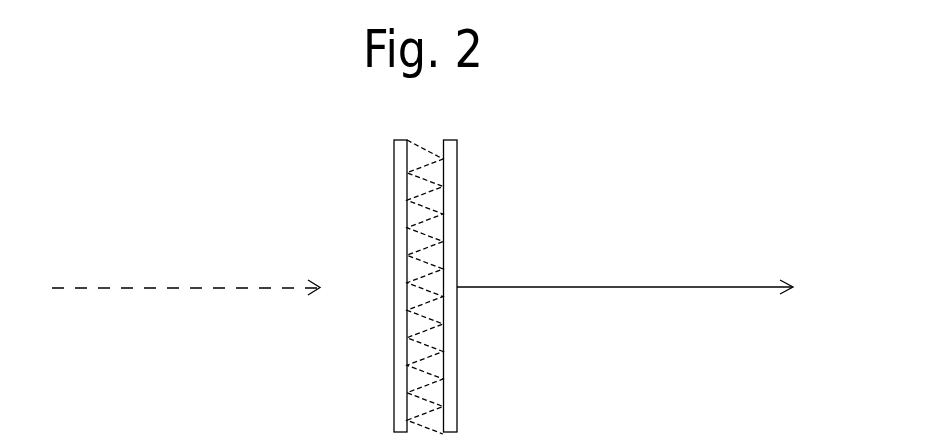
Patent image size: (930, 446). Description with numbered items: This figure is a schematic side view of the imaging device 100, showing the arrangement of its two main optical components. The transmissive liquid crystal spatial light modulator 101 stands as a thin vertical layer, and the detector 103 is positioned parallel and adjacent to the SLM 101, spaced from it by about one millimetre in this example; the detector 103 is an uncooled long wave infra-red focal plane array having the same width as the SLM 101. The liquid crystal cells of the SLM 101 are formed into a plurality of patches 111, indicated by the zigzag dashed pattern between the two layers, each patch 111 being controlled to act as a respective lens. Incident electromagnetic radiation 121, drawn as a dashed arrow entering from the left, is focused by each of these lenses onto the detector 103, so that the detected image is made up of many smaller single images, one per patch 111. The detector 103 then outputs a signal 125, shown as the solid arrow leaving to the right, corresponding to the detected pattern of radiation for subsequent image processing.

The imaging device 100 is at (138, 143).
The spatial light modulator 101 is at (401, 175).
The detector 103 is at (456, 173).
The patches 111 is at (410, 386).
The incident electromagnetic radiation 121 is at (123, 289).
The signal 125 is at (684, 285).